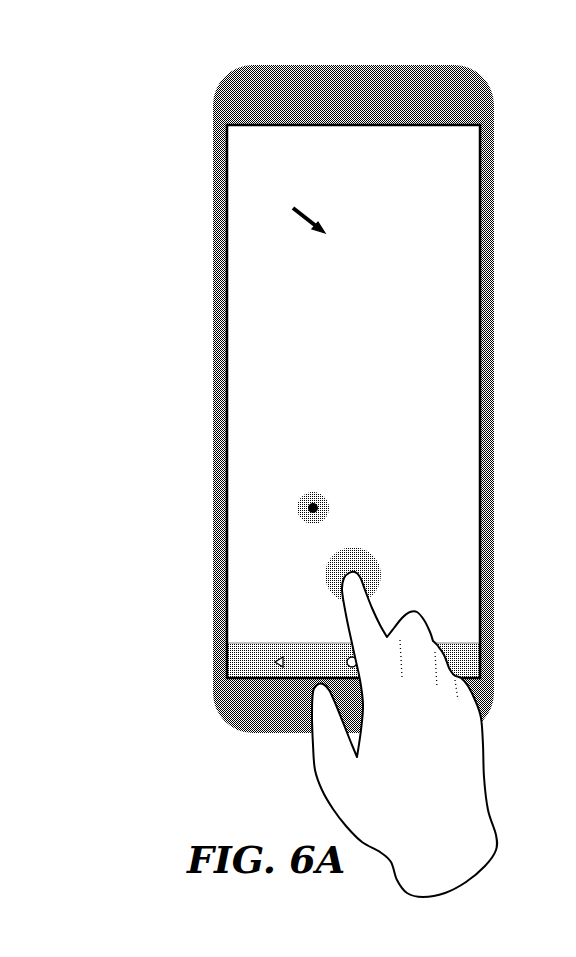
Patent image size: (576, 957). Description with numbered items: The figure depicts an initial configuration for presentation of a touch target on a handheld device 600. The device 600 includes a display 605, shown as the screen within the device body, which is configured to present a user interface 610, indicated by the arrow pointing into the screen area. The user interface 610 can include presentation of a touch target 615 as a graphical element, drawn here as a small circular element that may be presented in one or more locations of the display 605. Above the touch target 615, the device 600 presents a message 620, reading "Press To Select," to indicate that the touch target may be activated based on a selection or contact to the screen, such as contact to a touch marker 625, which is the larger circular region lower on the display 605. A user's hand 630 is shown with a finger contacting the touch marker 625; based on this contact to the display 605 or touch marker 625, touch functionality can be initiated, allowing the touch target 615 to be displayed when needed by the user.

The device 600 is at (233, 85).
The display 605 is at (463, 234).
The user interface 610 is at (286, 208).
The touch target 615 is at (304, 518).
The message 620 is at (270, 474).
The touch marker 625 is at (378, 568).
The user hand 630 is at (487, 797).